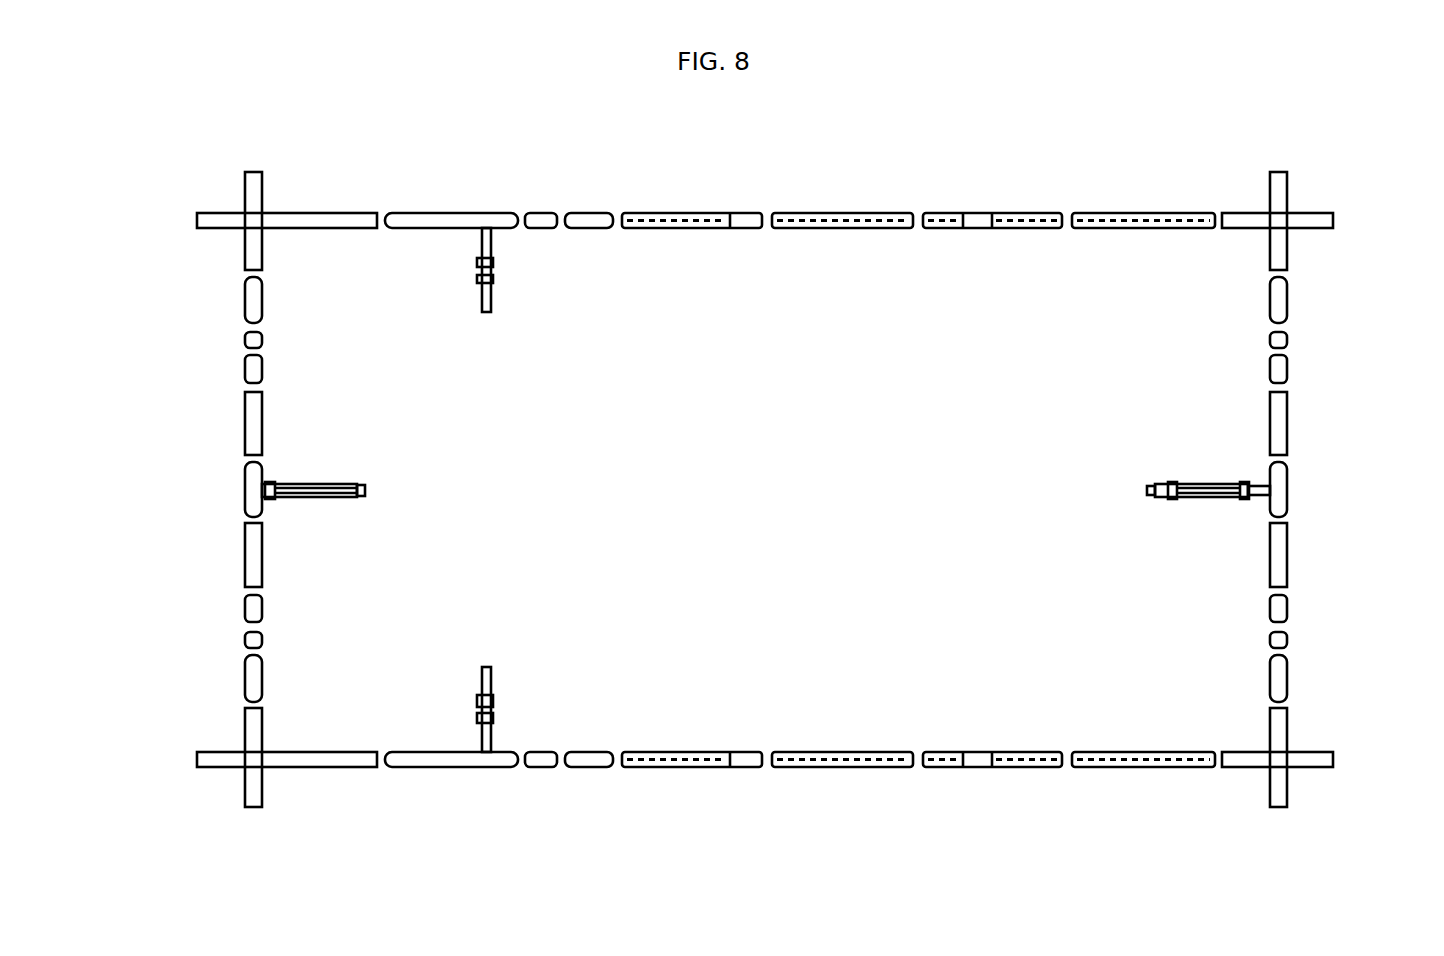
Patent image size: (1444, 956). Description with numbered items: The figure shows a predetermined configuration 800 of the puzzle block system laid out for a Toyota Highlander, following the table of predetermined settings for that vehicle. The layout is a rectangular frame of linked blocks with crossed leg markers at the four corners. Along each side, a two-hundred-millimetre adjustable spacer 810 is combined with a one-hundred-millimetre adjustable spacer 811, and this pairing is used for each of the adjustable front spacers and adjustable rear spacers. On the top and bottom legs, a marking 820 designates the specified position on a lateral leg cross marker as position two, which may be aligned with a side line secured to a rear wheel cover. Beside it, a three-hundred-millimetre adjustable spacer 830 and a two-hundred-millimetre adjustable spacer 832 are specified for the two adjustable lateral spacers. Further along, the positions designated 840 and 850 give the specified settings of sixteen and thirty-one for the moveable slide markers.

The predetermined configuration 800 is at (1117, 168).
The 200 mm adjustable spacer 810 is at (245, 367).
The 100 mm adjustable spacer 811 is at (245, 339).
The specified position on lateral leg cross marker 820 is at (485, 213).
The 300 mm adjustable spacer 830 is at (595, 213).
The 200 mm adjustable spacer 832 is at (545, 213).
The specified position for moveable slide marker 840 is at (750, 213).
The specified position for moveable slide marker 850 is at (975, 213).